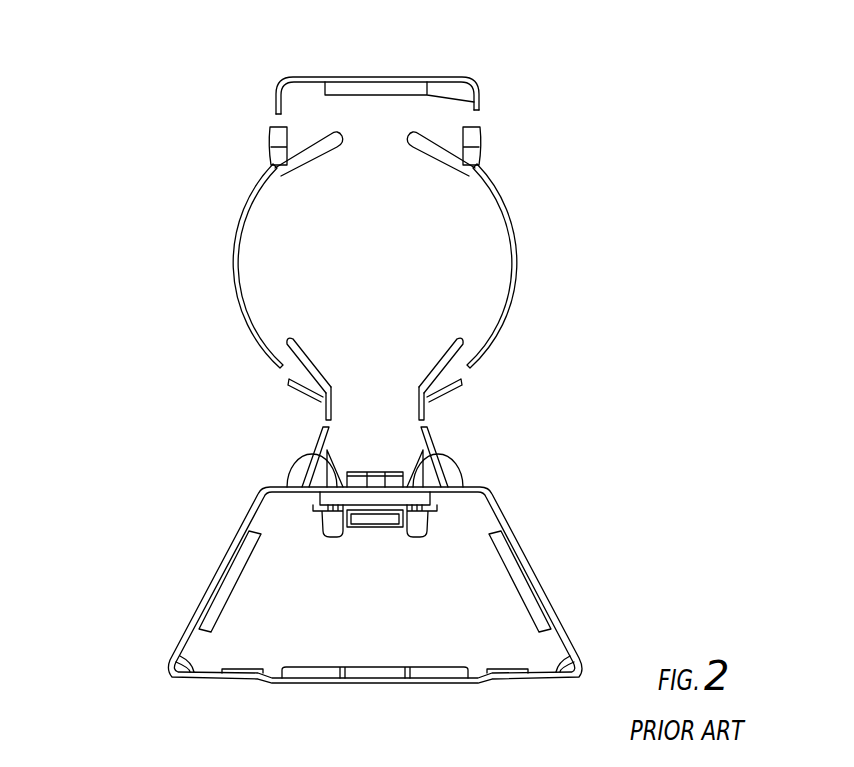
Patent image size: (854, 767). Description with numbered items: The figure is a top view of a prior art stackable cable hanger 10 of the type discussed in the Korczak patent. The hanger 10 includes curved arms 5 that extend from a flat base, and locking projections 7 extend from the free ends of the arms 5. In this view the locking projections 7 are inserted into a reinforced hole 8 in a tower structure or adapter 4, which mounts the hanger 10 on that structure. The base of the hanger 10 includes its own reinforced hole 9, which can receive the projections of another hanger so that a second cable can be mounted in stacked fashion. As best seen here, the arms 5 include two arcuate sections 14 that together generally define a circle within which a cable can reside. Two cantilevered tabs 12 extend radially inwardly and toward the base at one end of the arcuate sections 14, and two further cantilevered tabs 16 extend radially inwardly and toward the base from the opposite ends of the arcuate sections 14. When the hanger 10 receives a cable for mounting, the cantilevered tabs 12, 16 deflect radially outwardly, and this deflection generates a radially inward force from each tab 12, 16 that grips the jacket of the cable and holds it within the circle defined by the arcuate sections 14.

The tower structure or adapter 4 is at (538, 681).
The curved arms 5 is at (553, 205).
The locking projections 7 is at (323, 518).
The reinforced hole 8 is at (343, 495).
The reinforced hole 9 is at (347, 93).
The cable hanger 10 is at (610, 285).
The cantilevered tabs 12 is at (417, 150).
The arcuate sections 14 is at (234, 288).
The cantilevered tabs 16 is at (438, 358).